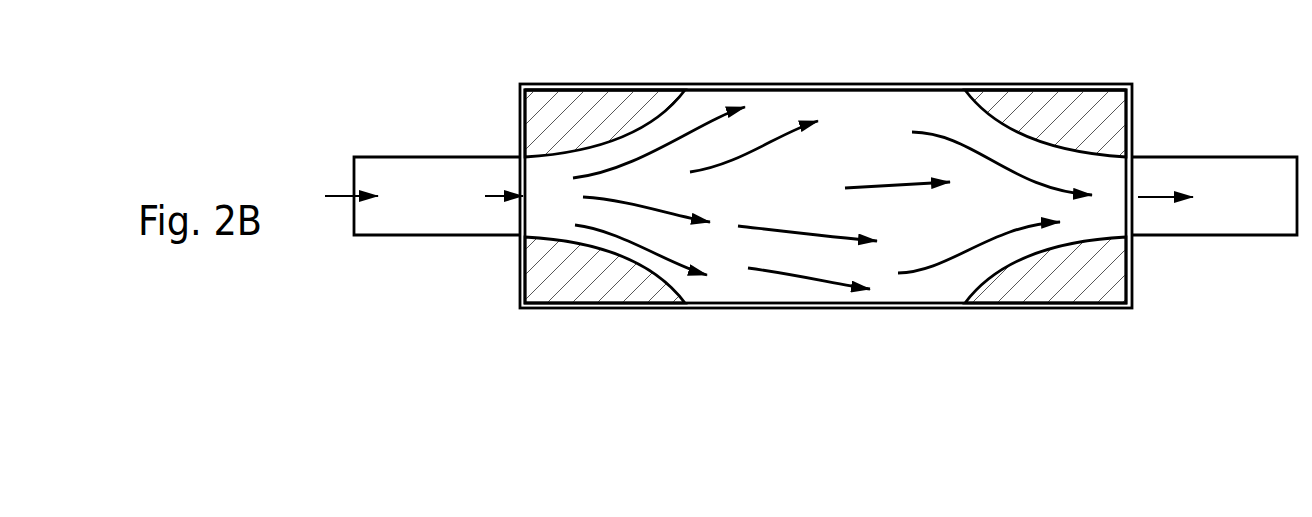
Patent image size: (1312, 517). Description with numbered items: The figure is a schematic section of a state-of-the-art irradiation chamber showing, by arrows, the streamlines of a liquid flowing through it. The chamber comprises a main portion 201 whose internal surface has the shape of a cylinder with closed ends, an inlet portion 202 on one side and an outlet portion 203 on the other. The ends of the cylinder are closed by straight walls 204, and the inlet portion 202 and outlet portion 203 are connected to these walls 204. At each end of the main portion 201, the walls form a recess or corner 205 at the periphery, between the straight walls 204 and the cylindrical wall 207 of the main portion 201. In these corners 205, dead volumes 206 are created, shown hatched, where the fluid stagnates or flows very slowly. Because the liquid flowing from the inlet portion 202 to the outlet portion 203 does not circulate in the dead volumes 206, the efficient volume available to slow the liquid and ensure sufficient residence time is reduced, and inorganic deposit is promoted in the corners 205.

The main portion 201 is at (1128, 329).
The inlet portion 202 is at (354, 329).
The outlet portion 203 is at (1132, 329).
The straight walls 204 is at (1131, 112).
The recess or corner 205 is at (1130, 84).
The dead volumes 206 is at (590, 102).
The cylindrical wall 207 is at (900, 85).